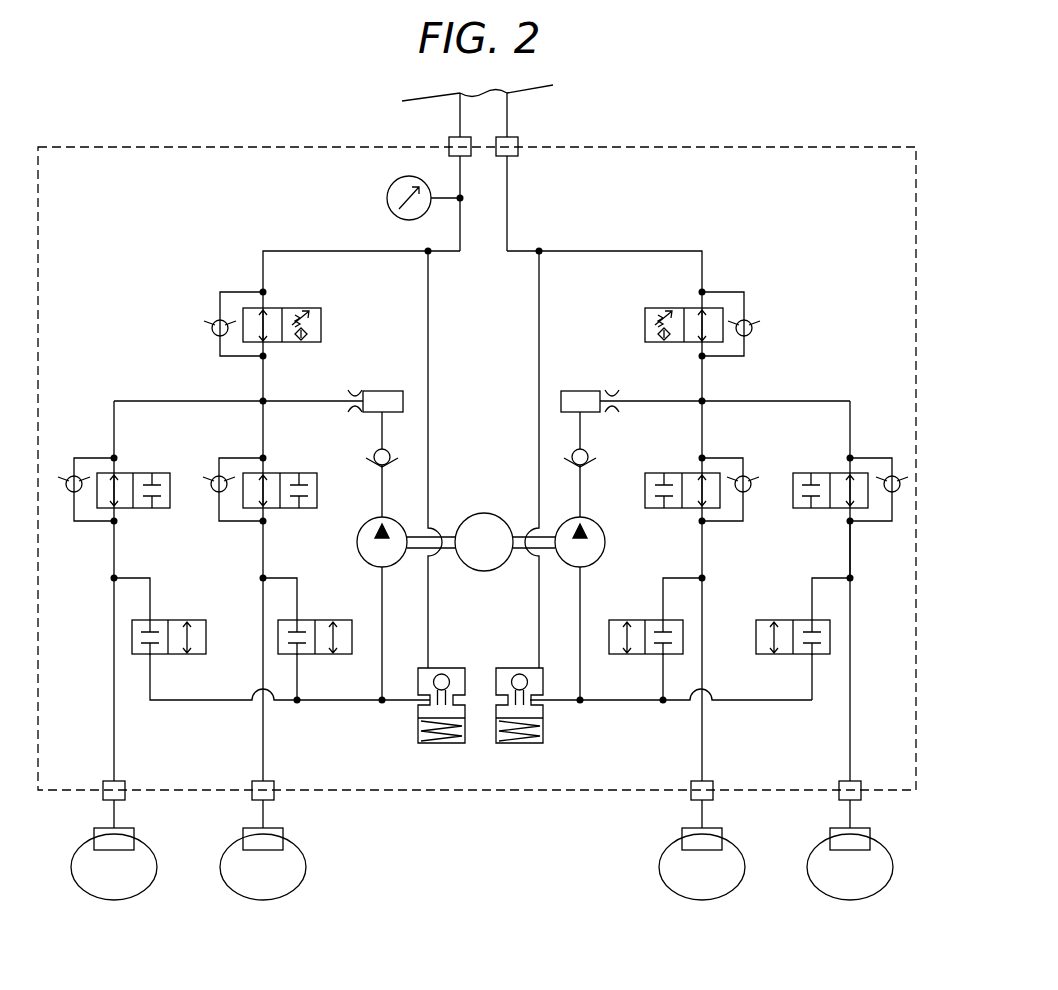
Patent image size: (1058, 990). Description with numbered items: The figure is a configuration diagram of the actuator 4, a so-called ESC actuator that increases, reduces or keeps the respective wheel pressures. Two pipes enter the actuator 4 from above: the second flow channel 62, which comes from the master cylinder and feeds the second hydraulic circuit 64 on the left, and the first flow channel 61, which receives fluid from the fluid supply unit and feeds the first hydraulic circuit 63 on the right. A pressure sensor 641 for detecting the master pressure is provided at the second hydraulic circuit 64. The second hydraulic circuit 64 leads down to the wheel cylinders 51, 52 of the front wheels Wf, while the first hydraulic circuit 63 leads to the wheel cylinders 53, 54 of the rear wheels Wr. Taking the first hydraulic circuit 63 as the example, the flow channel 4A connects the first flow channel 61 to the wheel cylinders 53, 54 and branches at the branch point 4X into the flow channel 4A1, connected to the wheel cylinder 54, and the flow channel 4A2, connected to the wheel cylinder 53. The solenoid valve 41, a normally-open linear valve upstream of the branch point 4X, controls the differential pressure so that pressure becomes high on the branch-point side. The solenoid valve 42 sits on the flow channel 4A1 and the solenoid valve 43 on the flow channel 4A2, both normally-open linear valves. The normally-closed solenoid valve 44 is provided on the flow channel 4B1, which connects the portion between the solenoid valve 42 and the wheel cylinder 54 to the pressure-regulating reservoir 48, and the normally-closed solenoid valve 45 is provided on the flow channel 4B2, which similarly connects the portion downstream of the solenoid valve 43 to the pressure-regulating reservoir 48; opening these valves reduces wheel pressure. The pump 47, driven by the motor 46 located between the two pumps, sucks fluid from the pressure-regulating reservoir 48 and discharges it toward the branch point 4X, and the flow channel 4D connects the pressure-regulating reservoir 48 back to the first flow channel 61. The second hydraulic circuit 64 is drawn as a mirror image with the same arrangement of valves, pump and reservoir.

The actuator 4 is at (88, 147).
The second hydraulic circuit 64 is at (136, 246).
The first hydraulic circuit 63 is at (822, 243).
The pressure sensor 641 is at (387, 200).
The second flow channel 62 is at (460, 112).
The first flow channel 61 is at (507, 123).
The flow channel 4A is at (634, 250).
The solenoid valve 41 is at (645, 308).
The branch point 4X is at (704, 401).
The flow channel 4D is at (539, 437).
The motor 46 is at (484, 513).
The pump 47 is at (605, 546).
The solenoid valve 43 is at (660, 472).
The solenoid valve 42 is at (797, 472).
The solenoid valve 45 is at (620, 620).
The solenoid valve 44 is at (766, 620).
The flow channel 4A2 is at (704, 601).
The flow channel 4A1 is at (850, 613).
The flow channel 4B2 is at (663, 679).
The flow channel 4B1 is at (742, 700).
The pressure-regulating reservoir 48 is at (543, 720).
The wheel cylinder 51 is at (100, 828).
The wheel cylinder 52 is at (240, 828).
The wheel cylinder 53 is at (682, 828).
The wheel cylinder 54 is at (830, 828).
The front wheel Wf is at (76, 886).
The rear wheel Wr is at (661, 881).